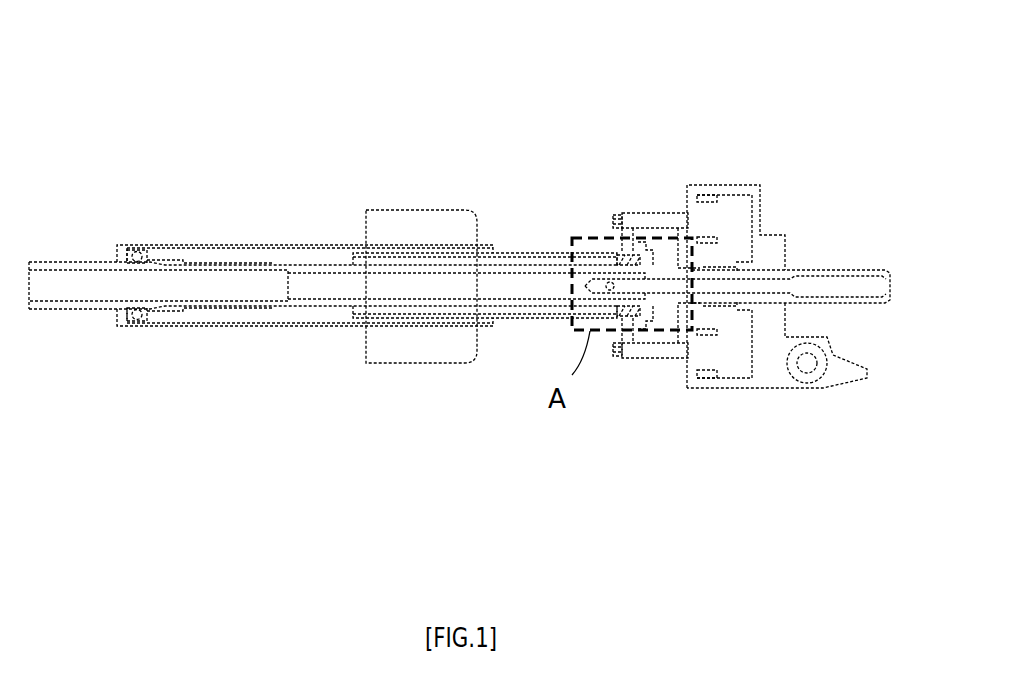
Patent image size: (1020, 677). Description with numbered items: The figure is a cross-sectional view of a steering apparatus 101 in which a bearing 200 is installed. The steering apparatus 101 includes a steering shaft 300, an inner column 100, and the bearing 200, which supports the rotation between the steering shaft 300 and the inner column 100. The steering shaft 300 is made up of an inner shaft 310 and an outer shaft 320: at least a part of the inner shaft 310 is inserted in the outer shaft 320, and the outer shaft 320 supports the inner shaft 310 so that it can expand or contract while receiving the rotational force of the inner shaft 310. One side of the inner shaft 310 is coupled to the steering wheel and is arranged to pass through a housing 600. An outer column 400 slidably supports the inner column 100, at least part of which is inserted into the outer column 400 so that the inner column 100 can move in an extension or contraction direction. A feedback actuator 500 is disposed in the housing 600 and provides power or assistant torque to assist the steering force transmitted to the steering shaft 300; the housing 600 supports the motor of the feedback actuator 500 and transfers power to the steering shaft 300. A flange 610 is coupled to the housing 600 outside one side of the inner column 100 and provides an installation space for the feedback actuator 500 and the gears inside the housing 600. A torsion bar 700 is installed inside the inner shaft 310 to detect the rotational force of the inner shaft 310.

The steering apparatus 101 is at (107, 83).
The inner column 100 is at (508, 323).
The bearing 200 is at (606, 247).
The steering shaft 300 is at (875, 552).
The inner shaft 310 is at (663, 298).
The outer shaft 320 is at (175, 311).
The outer column 400 is at (312, 245).
The feedback actuator 500 is at (711, 408).
The housing 600 is at (752, 185).
The flange 610 is at (623, 233).
The torsion bar 700 is at (818, 285).